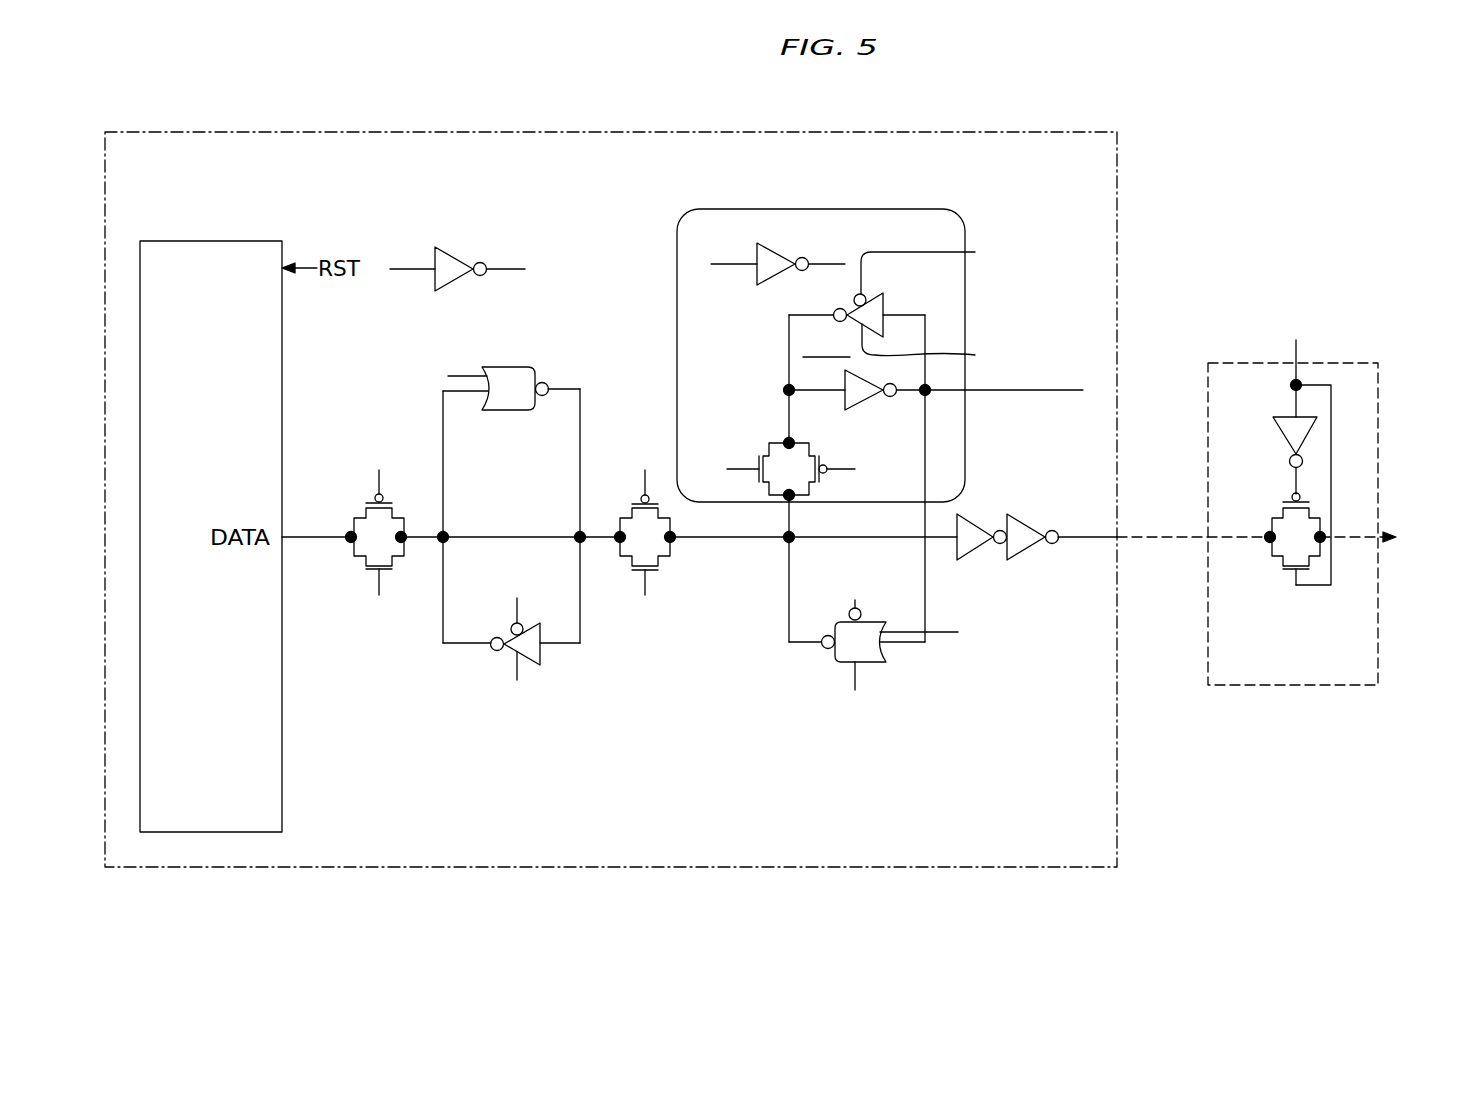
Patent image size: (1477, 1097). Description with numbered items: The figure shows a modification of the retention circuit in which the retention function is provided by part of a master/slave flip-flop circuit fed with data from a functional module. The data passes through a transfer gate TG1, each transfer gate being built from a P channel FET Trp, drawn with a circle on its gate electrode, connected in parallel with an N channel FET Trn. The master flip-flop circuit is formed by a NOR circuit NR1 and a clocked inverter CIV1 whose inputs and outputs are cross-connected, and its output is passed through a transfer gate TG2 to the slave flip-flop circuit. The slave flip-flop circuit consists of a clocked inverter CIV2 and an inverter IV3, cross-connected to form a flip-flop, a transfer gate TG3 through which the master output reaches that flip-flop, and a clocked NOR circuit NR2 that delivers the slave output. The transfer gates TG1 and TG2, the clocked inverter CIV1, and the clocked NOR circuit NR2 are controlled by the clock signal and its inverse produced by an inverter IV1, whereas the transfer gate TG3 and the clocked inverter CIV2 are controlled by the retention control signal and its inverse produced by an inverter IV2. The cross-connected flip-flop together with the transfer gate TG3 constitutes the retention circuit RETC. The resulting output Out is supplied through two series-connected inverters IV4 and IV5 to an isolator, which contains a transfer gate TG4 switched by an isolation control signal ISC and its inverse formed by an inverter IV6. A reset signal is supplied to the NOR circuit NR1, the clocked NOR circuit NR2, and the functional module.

The inverter IV1 is at (465, 247).
The transfer gate TG1 is at (365, 582).
The P channel FET Trp is at (357, 508).
The N channel FET Trn is at (357, 564).
The NOR circuit NR1 is at (520, 367).
The clocked inverter CIV1 is at (535, 663).
The transfer gate TG2 is at (660, 578).
The retention circuit RETC is at (887, 209).
The inverter IV2 is at (764, 245).
The clocked inverter CIV2 is at (883, 301).
The inverter IV3 is at (865, 406).
The transfer gate TG3 is at (764, 443).
The inverter IV4 is at (978, 520).
The inverter IV5 is at (1035, 520).
The output Out is at (1090, 537).
The clocked NOR circuit NR2 is at (835, 656).
The isolation control signal ISC is at (1296, 365).
The inverter IV6 is at (1275, 430).
The transfer gate TG4 is at (1278, 553).